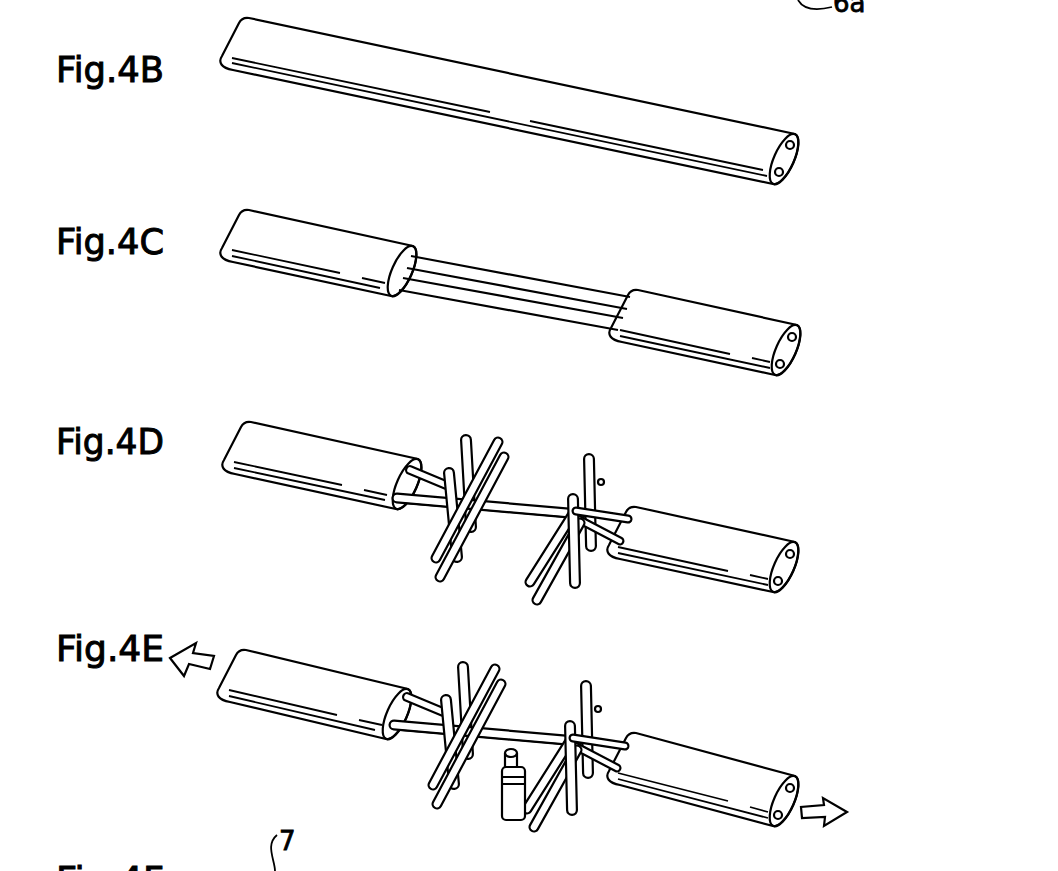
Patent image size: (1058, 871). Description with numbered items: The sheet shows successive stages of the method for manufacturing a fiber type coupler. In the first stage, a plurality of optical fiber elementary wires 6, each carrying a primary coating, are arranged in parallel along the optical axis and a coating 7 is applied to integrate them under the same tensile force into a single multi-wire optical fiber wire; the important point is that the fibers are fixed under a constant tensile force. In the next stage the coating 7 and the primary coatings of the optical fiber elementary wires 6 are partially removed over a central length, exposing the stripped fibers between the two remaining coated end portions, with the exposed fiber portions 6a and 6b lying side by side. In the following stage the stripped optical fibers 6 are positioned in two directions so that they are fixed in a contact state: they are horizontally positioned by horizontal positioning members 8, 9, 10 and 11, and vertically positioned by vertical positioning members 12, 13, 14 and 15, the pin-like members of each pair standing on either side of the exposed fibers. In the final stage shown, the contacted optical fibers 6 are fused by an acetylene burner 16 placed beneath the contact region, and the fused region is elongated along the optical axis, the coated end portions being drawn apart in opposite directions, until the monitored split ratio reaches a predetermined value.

In FIG. 4B, the optical fiber elementary wire 6 is at (797, 140).
In FIG. 4C, the optical fiber elementary wire 6 is at (800, 336).
In FIG. 4D, the optical fiber elementary wire 6 is at (797, 550).
In FIG. 4E, the optical fiber elementary wire 6 is at (795, 783).
In FIG. 4C, the lead wire end portion 6a is at (487, 275).
In FIG. 4D, the lead wire end portion 6a is at (418, 467).
In FIG. 4E, the lead wire end portion 6a is at (413, 695).
In FIG. 4C, the lead wire insulation 6b is at (553, 313).
In FIG. 4B, the coating 7 is at (388, 70).
In FIG. 4C, the coating 7 is at (342, 250).
In FIG. 4D, the coating 7 is at (278, 443).
In FIG. 4E, the coating 7 is at (270, 668).
In FIG. 4D, the horizontal positioning member 8 is at (450, 473).
In FIG. 4E, the horizontal positioning member 8 is at (447, 703).
In FIG. 4D, the horizontal positioning member 9 is at (467, 437).
In FIG. 4E, the horizontal positioning member 9 is at (463, 668).
In FIG. 4D, the horizontal positioning member 10 is at (577, 585).
In FIG. 4E, the horizontal positioning member 10 is at (569, 820).
In FIG. 4D, the horizontal positioning member 11 is at (593, 537).
In FIG. 4E, the horizontal positioning member 11 is at (590, 780).
In FIG. 4D, the vertical positioning member 12 is at (437, 556).
In FIG. 4E, the vertical positioning member 12 is at (433, 787).
In FIG. 4D, the vertical positioning member 13 is at (437, 574).
In FIG. 4E, the vertical positioning member 13 is at (433, 806).
In FIG. 4D, the vertical positioning member 14 is at (597, 477).
In FIG. 4E, the vertical positioning member 14 is at (595, 692).
In FIG. 4D, the vertical positioning member 15 is at (603, 482).
In FIG. 4E, the vertical positioning member 15 is at (598, 712).
In FIG. 4E, the acetylene burner 16 is at (496, 797).